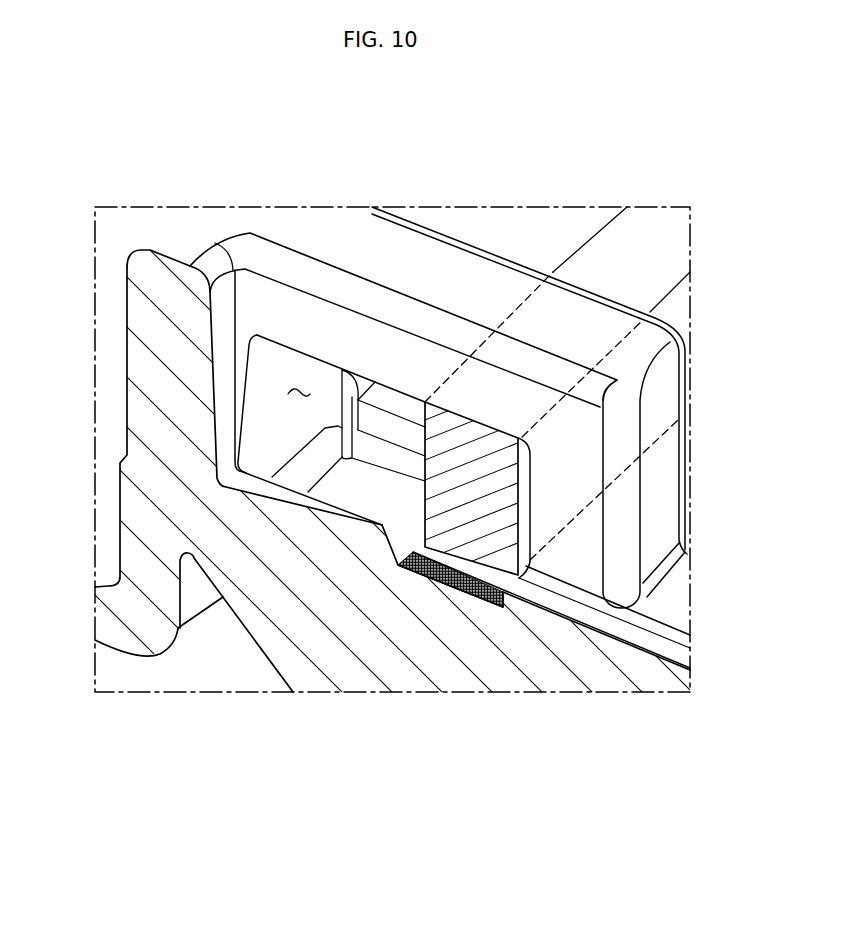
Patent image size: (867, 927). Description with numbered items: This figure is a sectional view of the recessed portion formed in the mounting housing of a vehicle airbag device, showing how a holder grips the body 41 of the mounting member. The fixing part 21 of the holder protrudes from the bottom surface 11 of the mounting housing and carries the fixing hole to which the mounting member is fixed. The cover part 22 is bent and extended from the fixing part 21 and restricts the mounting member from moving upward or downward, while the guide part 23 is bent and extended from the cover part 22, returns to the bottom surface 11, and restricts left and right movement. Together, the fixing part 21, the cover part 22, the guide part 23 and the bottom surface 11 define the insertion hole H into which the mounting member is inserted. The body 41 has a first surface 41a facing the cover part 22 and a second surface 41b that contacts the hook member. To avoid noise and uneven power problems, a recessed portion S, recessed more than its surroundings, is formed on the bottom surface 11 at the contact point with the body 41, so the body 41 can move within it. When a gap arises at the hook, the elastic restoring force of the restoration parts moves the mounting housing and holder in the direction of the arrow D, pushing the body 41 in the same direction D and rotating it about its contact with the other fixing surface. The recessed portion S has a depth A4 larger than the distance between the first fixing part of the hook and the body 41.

The bottom surface 11 is at (262, 492).
The fixing part 21 is at (127, 343).
The cover part 22 is at (460, 273).
The guide part 23 is at (587, 496).
The body 41 is at (536, 533).
The first surface 41a is at (620, 258).
The second surface 41b is at (481, 570).
The insertion hole H is at (300, 386).
The direction of arrow D is at (403, 428).
The recessed portion S is at (410, 577).
The depth A4 is at (435, 690).